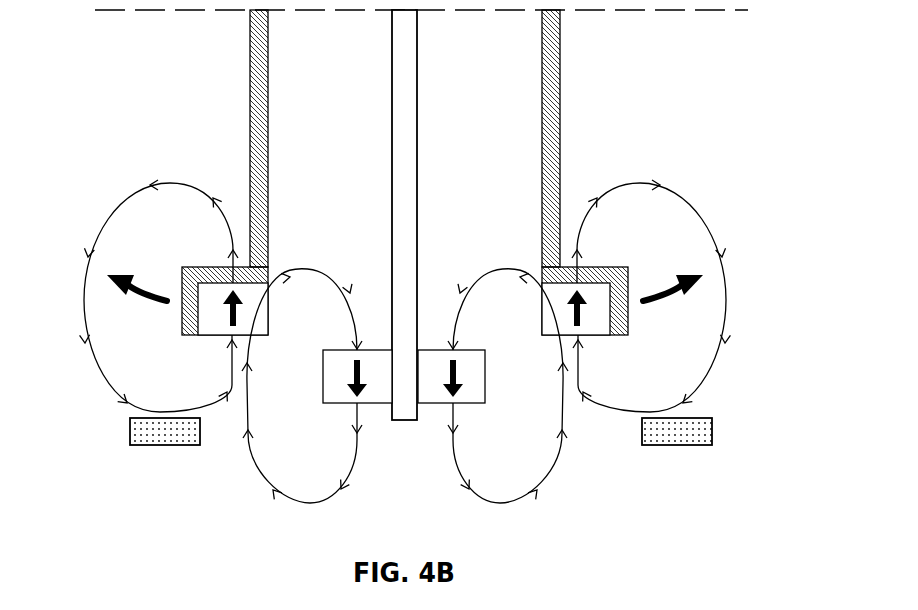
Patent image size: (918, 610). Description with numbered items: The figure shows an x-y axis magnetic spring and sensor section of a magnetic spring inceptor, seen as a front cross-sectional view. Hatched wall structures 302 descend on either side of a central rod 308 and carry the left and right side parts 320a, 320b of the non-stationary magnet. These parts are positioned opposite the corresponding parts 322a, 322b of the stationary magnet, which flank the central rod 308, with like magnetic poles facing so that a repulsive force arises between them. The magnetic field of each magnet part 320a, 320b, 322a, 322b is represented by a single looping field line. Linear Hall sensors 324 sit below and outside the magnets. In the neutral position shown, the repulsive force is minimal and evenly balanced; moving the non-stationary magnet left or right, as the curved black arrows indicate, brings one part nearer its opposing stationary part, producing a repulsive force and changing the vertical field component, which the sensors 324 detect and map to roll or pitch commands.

The chamber wall 302 is at (250, 100).
The central rod / divider 308 is at (417, 123).
The left side part of non-stationary magnet 320a is at (220, 335).
The right side part of non-stationary magnet 320b is at (595, 335).
The left side part of stationary magnet 322a is at (373, 403).
The right side part of stationary magnet 322b is at (477, 403).
The linear Hall sensors 324 is at (152, 445).